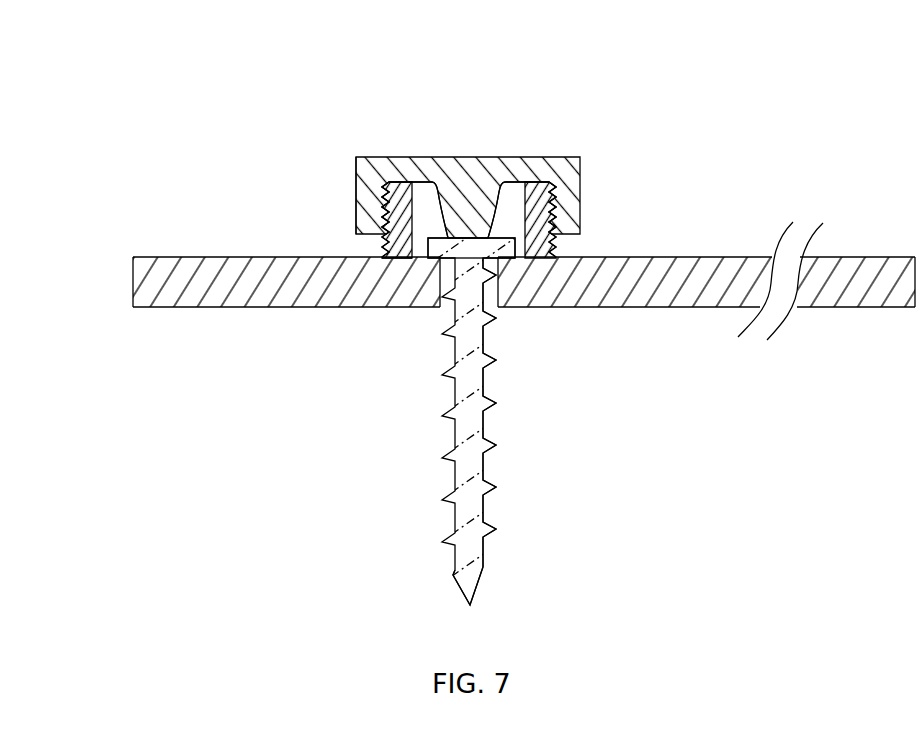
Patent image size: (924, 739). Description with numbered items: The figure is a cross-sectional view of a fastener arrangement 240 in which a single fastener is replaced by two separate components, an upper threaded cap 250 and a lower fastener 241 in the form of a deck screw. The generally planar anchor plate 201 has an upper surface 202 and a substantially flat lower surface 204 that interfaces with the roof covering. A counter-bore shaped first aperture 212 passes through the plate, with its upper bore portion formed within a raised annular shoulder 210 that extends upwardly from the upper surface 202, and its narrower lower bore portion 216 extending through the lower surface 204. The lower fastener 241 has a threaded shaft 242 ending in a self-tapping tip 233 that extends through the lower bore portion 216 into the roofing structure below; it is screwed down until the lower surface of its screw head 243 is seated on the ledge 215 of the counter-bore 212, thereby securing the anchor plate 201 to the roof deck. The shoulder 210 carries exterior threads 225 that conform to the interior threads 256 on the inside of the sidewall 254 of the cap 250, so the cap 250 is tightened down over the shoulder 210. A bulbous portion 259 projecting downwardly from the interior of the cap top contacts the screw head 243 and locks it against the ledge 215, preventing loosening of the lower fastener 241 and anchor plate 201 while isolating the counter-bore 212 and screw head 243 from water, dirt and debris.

The anchor plate 201 is at (133, 287).
The upper surface 202 is at (198, 256).
The lower surface 204 is at (190, 308).
The raised annular shoulder 210 is at (402, 183).
The first aperture 212 is at (423, 200).
The ledge 215 is at (418, 259).
The lower bore portion 216 is at (450, 283).
The exterior threads 225 is at (385, 238).
The self-tapping tip 233 is at (477, 590).
The fastener arrangement 240 is at (415, 433).
The lower fastener 241 is at (540, 390).
The threaded shaft 242 is at (491, 457).
The screw head 243 is at (519, 251).
The cap 250 is at (530, 157).
The sidewall 254 is at (356, 191).
The interior threads 256 is at (552, 208).
The bulbous portion 259 is at (452, 212).